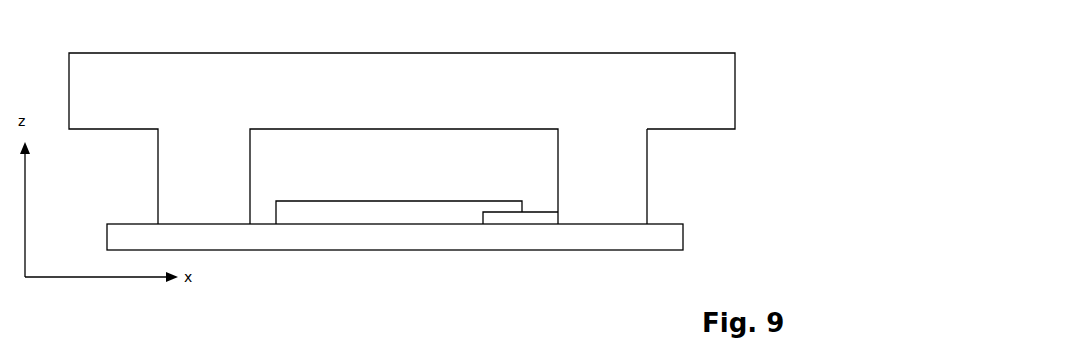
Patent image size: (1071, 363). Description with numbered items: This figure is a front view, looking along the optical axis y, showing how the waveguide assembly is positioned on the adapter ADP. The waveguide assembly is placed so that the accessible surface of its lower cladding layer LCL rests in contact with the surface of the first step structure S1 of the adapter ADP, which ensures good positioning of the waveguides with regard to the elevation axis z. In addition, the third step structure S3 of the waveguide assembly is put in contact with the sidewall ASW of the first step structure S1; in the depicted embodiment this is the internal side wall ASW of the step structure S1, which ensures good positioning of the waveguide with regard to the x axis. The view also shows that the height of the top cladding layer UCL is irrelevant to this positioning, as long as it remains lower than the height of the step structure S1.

The adapter ADP is at (598, 73).
The sidewall of the first step structure ASW is at (558, 153).
The first step structure S1 is at (617, 198).
The third step structure S3 is at (538, 219).
The top cladding layer UCL is at (303, 208).
The lower cladding layer LCL is at (550, 240).